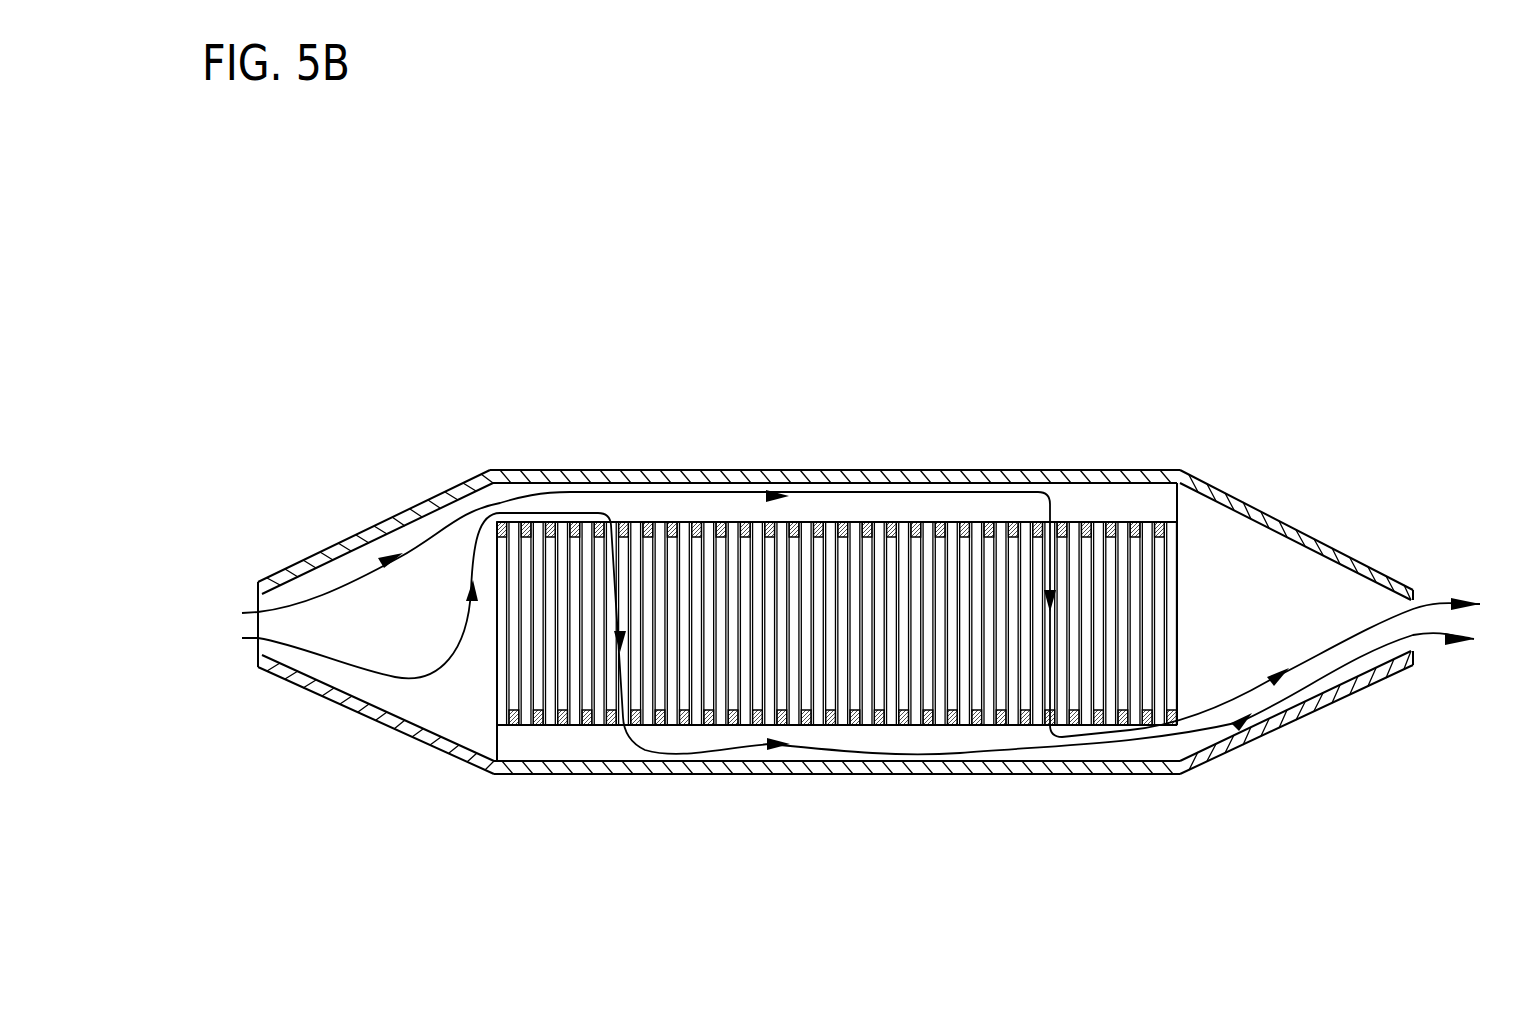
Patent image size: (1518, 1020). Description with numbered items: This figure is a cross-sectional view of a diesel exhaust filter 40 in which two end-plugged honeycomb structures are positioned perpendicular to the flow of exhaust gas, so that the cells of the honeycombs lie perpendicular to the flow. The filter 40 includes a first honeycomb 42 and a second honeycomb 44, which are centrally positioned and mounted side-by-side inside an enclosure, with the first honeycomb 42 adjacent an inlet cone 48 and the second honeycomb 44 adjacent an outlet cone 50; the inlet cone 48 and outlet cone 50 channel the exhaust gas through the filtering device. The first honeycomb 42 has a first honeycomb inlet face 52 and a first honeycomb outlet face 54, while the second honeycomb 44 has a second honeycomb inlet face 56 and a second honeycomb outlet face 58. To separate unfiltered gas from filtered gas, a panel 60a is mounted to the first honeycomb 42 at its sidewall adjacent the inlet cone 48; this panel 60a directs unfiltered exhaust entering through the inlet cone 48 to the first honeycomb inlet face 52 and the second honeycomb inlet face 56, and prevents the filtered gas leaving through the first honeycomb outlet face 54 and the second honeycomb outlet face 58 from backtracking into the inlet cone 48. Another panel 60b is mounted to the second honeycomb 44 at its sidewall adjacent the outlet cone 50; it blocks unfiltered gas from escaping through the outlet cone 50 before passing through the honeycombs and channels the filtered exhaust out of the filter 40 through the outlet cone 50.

The filter 40 is at (352, 237).
The first honeycomb 42 is at (595, 726).
The second honeycomb 44 is at (959, 726).
The inlet cone 48 is at (258, 655).
The outlet cone 50 is at (1414, 594).
The first honeycomb inlet face 52 is at (674, 521).
The first honeycomb outlet face 54 is at (730, 726).
The second honeycomb inlet face 56 is at (922, 521).
The second honeycomb outlet face 58 is at (1099, 726).
The panel 60a is at (496, 752).
The panel 60b is at (1177, 506).